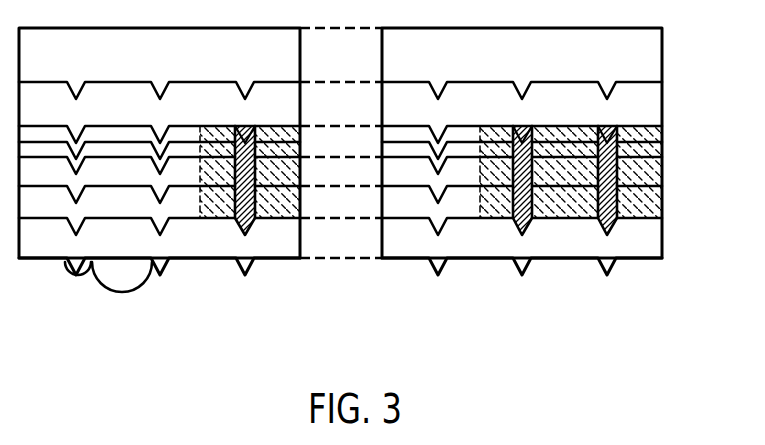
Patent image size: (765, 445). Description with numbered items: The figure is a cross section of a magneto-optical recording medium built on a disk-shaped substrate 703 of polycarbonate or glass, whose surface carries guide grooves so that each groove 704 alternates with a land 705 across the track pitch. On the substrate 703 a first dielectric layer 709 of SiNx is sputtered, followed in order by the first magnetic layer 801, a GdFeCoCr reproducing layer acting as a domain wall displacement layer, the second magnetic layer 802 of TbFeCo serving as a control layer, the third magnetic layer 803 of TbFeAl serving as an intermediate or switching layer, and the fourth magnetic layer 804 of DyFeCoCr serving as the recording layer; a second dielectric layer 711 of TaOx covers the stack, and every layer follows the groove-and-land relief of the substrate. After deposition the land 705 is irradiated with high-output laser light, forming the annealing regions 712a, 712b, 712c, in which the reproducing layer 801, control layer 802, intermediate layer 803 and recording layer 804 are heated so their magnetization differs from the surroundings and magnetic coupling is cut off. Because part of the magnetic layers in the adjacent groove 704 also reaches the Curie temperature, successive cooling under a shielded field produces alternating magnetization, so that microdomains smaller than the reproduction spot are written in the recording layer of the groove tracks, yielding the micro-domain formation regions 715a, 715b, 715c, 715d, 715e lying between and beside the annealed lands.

The substrate 703 is at (650, 58).
The first dielectric layer 709 is at (650, 100).
The first magnetic layer 801 is at (662, 134).
The second magnetic layer 802 is at (662, 153).
The third magnetic layer 803 is at (662, 180).
The fourth magnetic layer 804 is at (662, 207).
The second dielectric layer 711 is at (650, 240).
The micro-domain formation region 715a is at (212, 219).
The micro-domain formation region 715b is at (280, 219).
The micro-domain formation region 715c is at (492, 219).
The micro-domain formation region 715d is at (565, 219).
The micro-domain formation region 715e is at (637, 219).
The annealing region 712a is at (245, 236).
The annealing region 712b is at (522, 236).
The annealing region 712c is at (607, 236).
The groove 704 is at (135, 291).
The land 705 is at (80, 283).